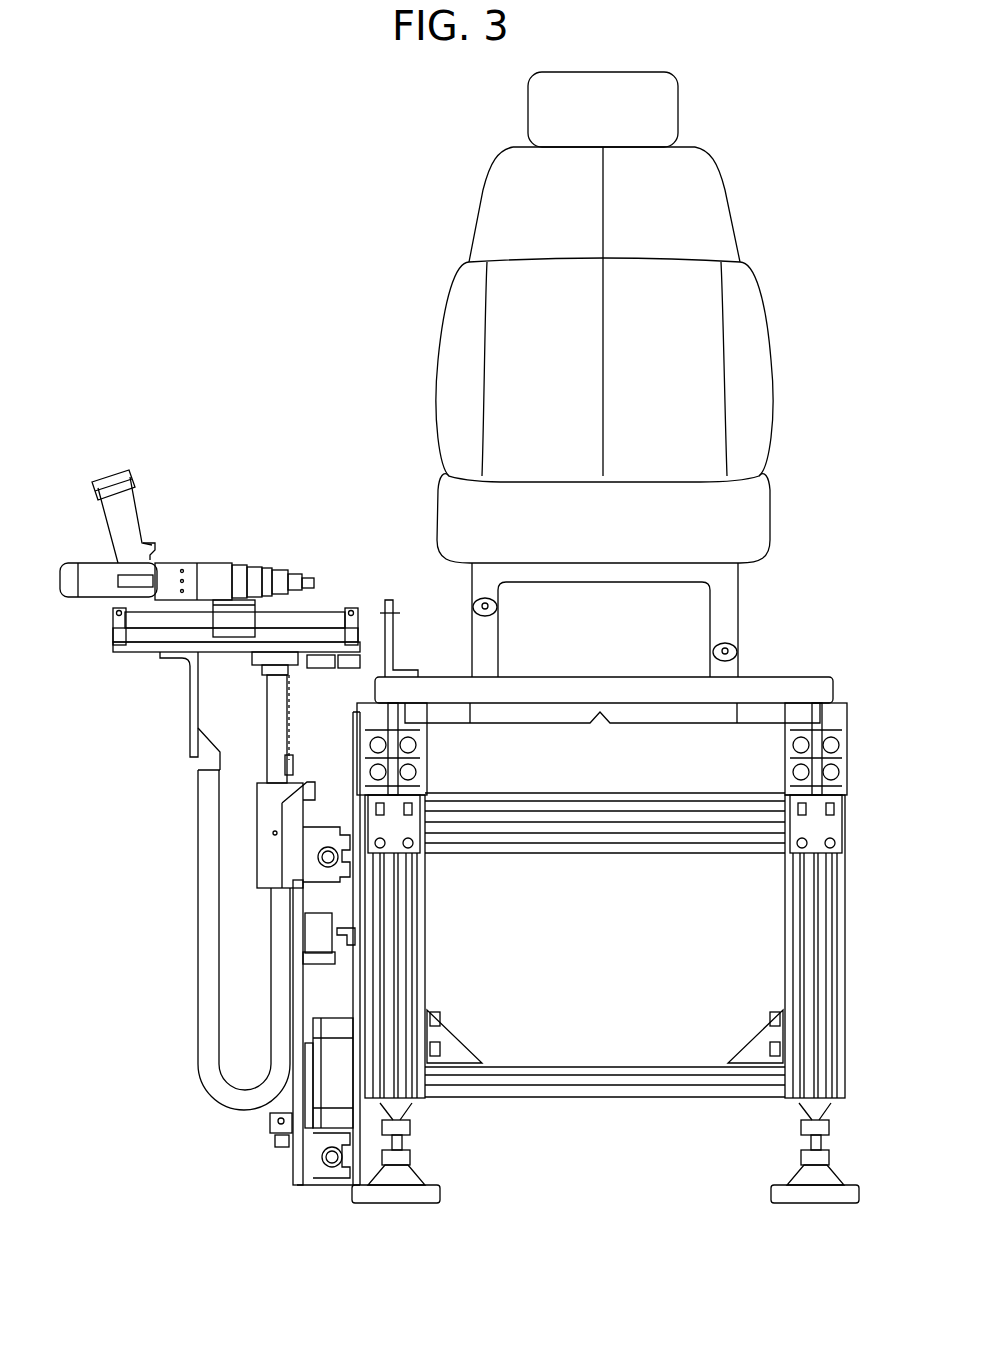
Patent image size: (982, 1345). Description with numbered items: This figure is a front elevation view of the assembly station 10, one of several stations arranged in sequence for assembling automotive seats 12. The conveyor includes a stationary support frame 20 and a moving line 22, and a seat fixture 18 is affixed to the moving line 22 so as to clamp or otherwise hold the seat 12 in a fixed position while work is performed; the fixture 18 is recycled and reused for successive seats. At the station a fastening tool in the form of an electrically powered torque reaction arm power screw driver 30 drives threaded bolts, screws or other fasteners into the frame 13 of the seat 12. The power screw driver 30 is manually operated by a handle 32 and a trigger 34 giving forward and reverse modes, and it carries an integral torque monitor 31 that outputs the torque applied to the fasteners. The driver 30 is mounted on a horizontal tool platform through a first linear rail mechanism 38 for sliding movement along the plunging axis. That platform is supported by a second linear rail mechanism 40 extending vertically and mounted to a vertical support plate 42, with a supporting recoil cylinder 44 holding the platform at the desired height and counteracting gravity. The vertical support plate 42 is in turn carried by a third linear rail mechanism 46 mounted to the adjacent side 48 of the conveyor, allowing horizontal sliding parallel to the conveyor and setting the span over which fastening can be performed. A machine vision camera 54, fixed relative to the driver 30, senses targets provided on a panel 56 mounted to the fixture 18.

The assembly station 10 is at (300, 98).
The automotive seat 12 is at (492, 201).
The frame 13 is at (738, 612).
The seat fixture 18 is at (770, 693).
The stationary support frame 20 is at (840, 978).
The moving line 22 is at (845, 745).
The power screw driver 30 is at (205, 572).
The integral torque monitor 31 is at (90, 570).
The handle 32 is at (112, 476).
The trigger 34 is at (160, 548).
The first linear rail mechanism 38 is at (318, 620).
The second linear rail mechanism 40 is at (275, 733).
The vertical support plate 42 is at (300, 1165).
The supporting recoil cylinder 44 is at (277, 968).
The third linear rail mechanism 46 is at (330, 855).
The side of the conveyor 48 is at (360, 977).
The machine vision camera 54 is at (322, 668).
The panel 56 is at (390, 648).